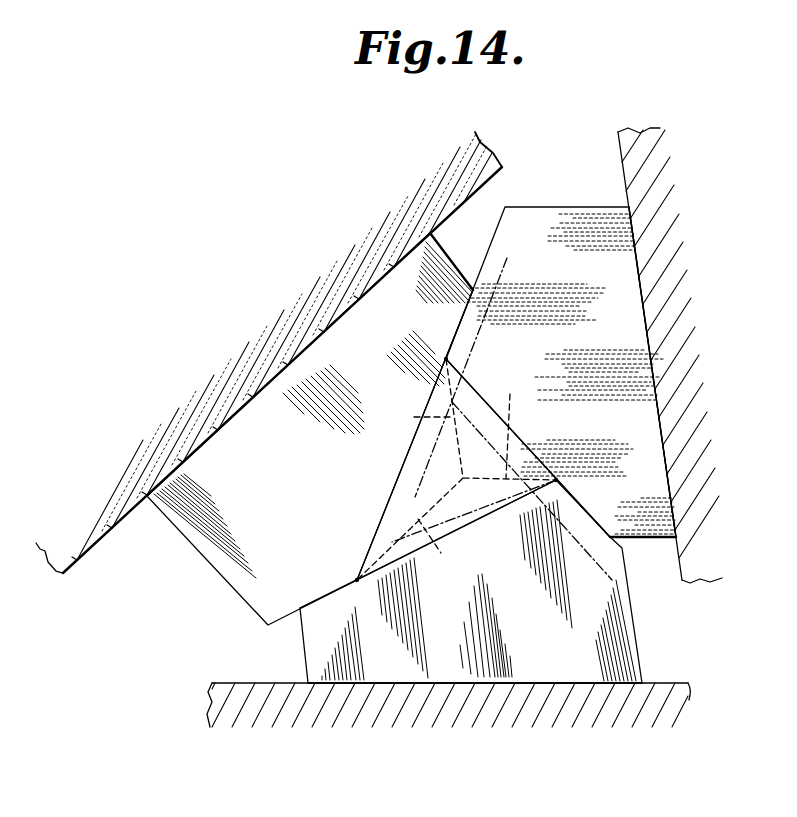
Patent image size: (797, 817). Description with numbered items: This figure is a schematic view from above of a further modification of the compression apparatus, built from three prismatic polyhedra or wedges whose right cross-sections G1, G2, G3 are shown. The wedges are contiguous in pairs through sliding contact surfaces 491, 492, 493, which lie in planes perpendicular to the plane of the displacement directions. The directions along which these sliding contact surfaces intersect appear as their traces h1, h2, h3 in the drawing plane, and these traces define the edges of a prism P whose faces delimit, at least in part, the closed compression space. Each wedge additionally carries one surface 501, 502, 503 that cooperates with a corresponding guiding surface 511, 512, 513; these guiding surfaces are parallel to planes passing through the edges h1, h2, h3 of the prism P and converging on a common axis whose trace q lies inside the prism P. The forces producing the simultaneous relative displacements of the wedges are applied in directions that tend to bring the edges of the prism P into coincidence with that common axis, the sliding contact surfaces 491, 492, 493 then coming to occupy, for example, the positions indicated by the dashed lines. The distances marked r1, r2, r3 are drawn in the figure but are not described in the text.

The guiding surface 511 is at (457, 209).
The guiding surface 512 is at (621, 170).
The guiding surface 513 is at (267, 683).
The surface 501 is at (242, 408).
The surface 502 is at (637, 271).
The surface 503 is at (552, 683).
The sliding contact surface 491 is at (398, 470).
The sliding contact surface 492 is at (521, 440).
The sliding contact surface 493 is at (468, 526).
The right cross-section of first wedge G1 is at (335, 461).
The right cross-section of second wedge G2 is at (587, 352).
The right cross-section of third wedge G3 is at (540, 615).
The trace of intersection direction h1 is at (445, 358).
The trace of intersection direction h2 is at (557, 480).
The trace of intersection direction h3 is at (357, 581).
The distance from point P to face 49_1 r1 is at (420, 414).
The distance from point P to face 49_2 r2 is at (507, 424).
The distance from point P to face 49_3 r3 is at (432, 550).
The prism P is at (450, 477).
The trace of common axis q is at (456, 469).